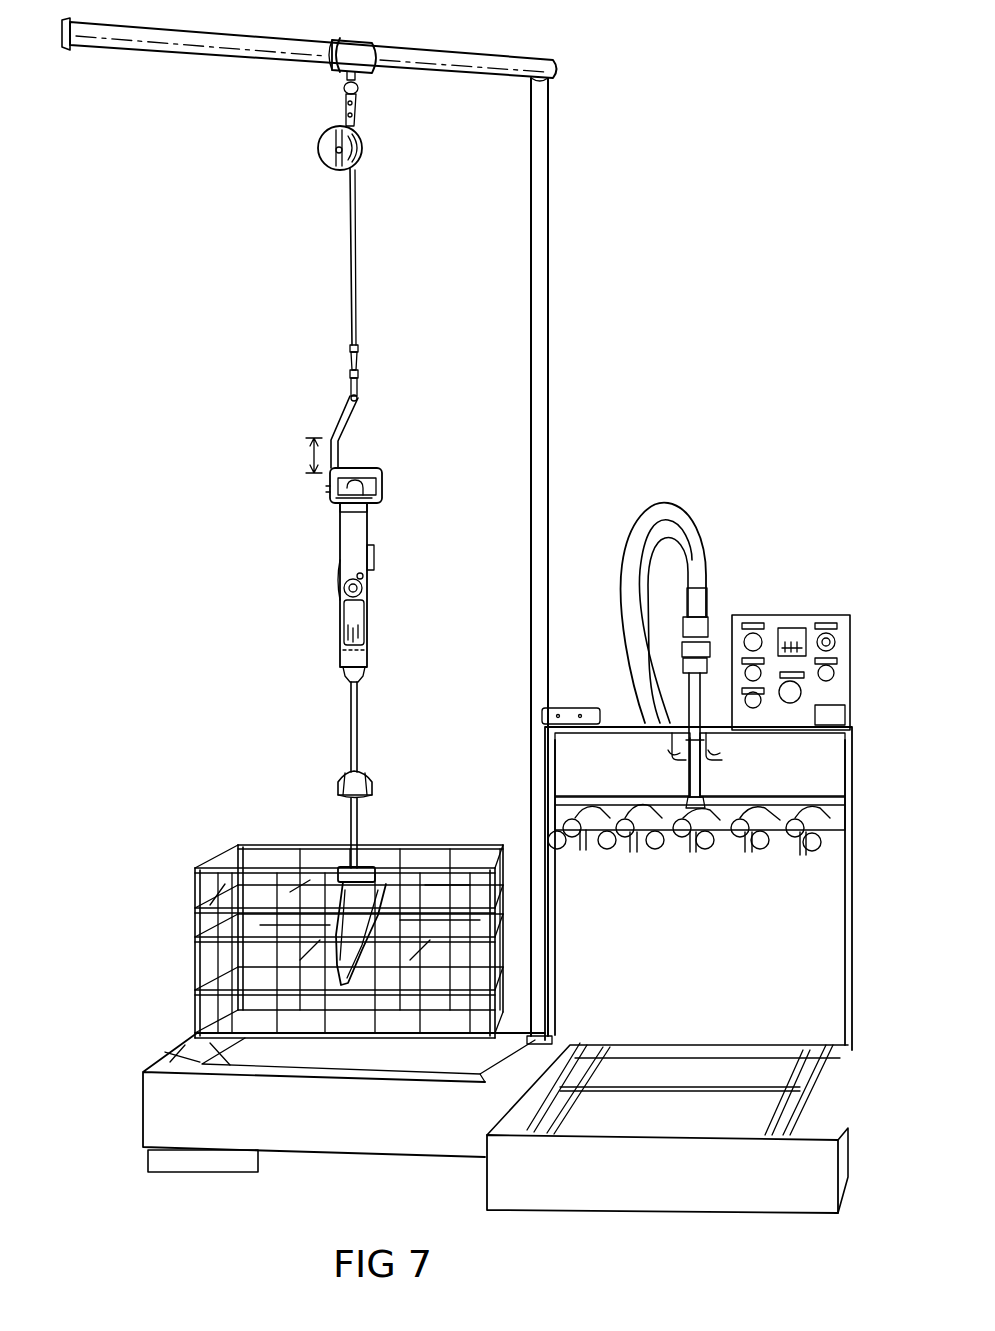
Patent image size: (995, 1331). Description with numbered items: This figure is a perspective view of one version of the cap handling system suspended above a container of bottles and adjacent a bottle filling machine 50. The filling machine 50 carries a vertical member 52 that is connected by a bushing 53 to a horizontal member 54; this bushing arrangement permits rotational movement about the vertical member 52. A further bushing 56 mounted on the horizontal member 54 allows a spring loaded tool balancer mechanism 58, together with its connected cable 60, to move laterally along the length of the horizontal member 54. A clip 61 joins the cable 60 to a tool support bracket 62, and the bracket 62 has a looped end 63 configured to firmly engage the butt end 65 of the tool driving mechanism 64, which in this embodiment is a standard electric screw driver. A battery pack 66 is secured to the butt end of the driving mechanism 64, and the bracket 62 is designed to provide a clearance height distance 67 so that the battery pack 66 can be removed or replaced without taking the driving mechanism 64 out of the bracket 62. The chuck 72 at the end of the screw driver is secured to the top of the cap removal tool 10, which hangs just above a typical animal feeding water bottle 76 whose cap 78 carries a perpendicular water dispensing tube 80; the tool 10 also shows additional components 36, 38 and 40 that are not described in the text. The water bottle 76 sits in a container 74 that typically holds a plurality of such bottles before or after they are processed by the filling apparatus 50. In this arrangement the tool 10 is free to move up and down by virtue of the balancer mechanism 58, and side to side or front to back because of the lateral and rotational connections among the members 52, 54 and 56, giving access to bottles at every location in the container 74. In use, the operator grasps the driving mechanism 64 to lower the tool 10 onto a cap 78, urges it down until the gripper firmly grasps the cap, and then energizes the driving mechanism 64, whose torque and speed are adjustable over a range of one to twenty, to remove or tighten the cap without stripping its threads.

The cap removal tool 10 is at (349, 727).
The shaft 36 is at (362, 723).
The bell-shaped guard 38 is at (368, 778).
The guard lower end 40 is at (330, 788).
The bottle filling machine 50 is at (750, 600).
The vertical member 52 is at (556, 349).
The bushing 53 is at (563, 70).
The horizontal member 54 is at (190, 53).
The bushing 56 is at (365, 77).
The spring loaded tool balancer mechanism 58 is at (300, 150).
The cable 60 is at (358, 210).
The clip 61 is at (362, 372).
The tool support bracket 62 is at (374, 428).
The looped end 63 is at (380, 503).
The tool driving mechanism 64 is at (320, 602).
The butt end 65 is at (325, 515).
The battery pack 66 is at (385, 485).
The clearance height distance 67 is at (310, 457).
The chuck 72 is at (340, 680).
The container 74 is at (210, 862).
The animal feeding water bottle 76 is at (380, 896).
The cap 78 is at (366, 866).
The water dispensing tube 80 is at (360, 819).